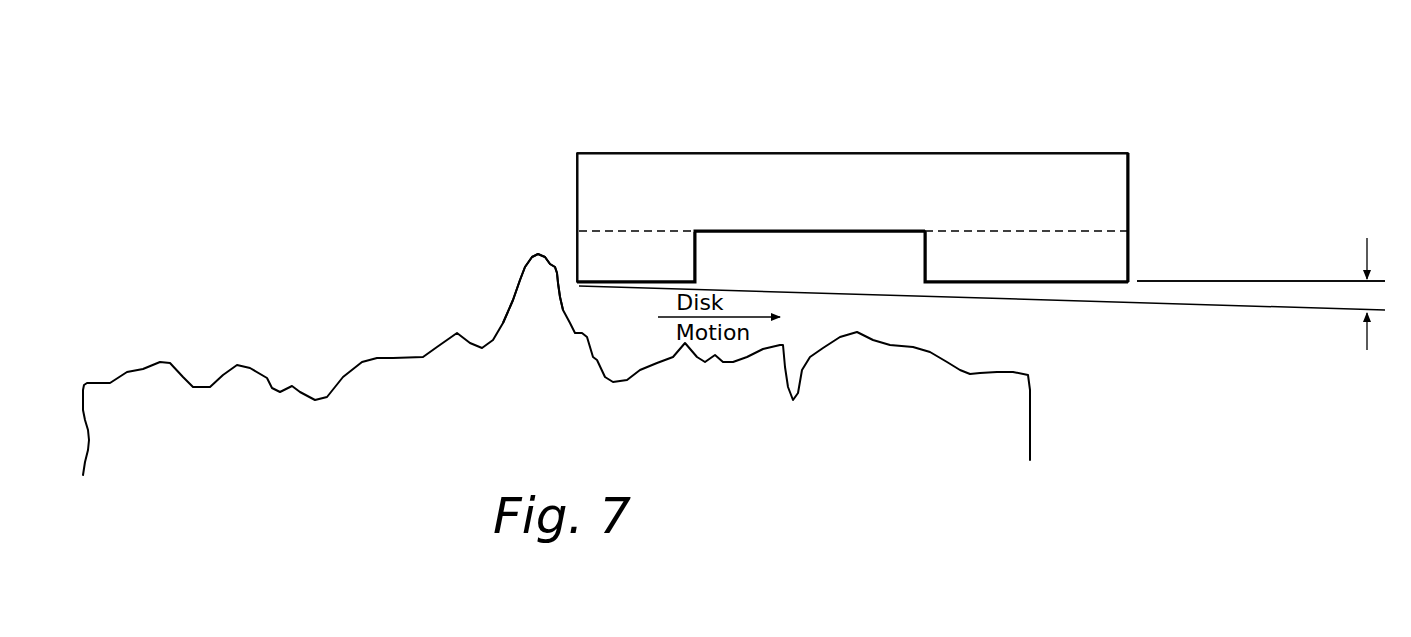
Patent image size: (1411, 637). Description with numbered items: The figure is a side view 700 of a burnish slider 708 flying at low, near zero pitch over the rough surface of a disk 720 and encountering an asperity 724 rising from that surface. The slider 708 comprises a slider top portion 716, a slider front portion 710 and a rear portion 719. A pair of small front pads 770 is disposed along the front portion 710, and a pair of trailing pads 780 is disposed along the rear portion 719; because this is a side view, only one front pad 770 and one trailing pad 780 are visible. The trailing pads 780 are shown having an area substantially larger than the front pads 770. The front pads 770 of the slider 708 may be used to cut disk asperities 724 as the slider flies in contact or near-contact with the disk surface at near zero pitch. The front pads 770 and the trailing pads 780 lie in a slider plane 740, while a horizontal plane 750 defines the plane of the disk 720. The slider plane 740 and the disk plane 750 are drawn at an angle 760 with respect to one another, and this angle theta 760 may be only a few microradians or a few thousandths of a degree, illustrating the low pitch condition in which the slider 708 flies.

The side view 700 is at (621, 97).
The slider 708 is at (687, 190).
The slider front portion 710 is at (576, 163).
The slider top portion 716 is at (933, 152).
The rear portion 719 is at (1130, 160).
The front pad 770 is at (575, 275).
The trailing pad 780 is at (1137, 277).
The plane 740 is at (1247, 281).
The horizontal plane 750 is at (1258, 306).
The angle 760 is at (1337, 293).
The disk 720 is at (968, 373).
The asperity 724 is at (536, 250).